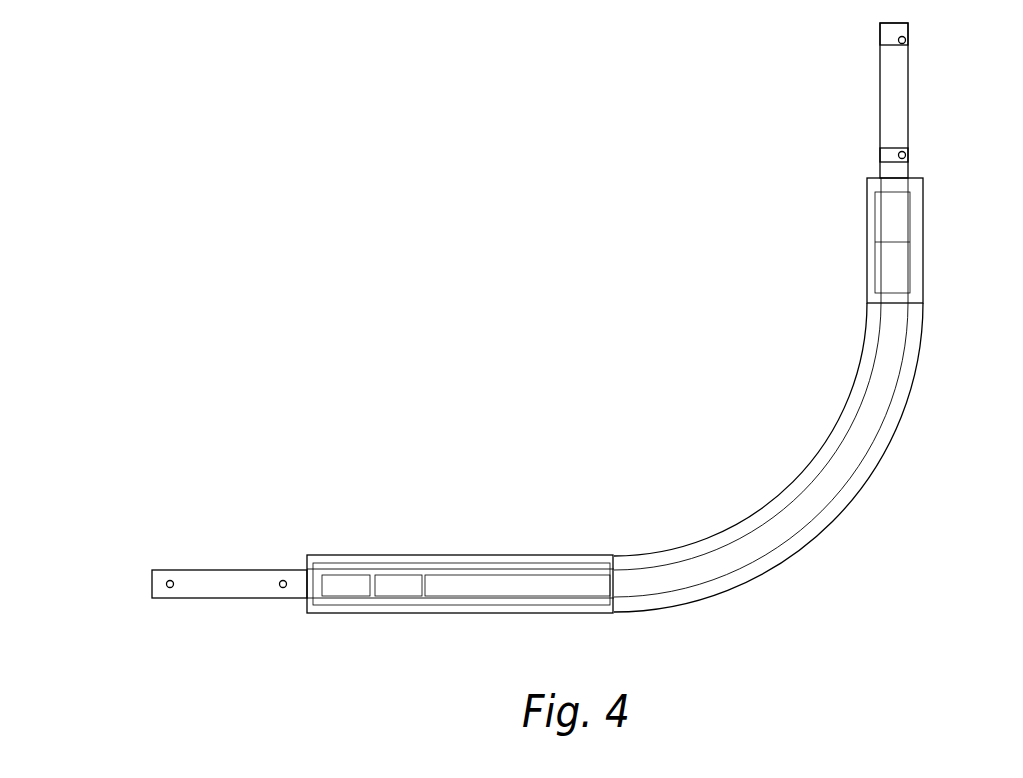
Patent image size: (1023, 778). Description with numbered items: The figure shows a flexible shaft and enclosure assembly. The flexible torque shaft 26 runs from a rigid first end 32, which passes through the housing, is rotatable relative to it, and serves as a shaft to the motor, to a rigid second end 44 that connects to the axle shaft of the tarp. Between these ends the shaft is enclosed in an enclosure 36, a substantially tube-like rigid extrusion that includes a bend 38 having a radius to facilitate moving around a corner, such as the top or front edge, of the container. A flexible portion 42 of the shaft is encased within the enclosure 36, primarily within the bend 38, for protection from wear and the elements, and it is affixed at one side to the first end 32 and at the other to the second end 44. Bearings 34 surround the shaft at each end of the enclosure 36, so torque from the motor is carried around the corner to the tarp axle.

The flexible torque shaft 26 is at (895, 127).
The first end 32 is at (178, 579).
The bearings 34 is at (896, 218).
The enclosure 36 is at (490, 555).
The bend 38 is at (785, 558).
The flexible portion 42 is at (742, 553).
The second end 44 is at (895, 52).